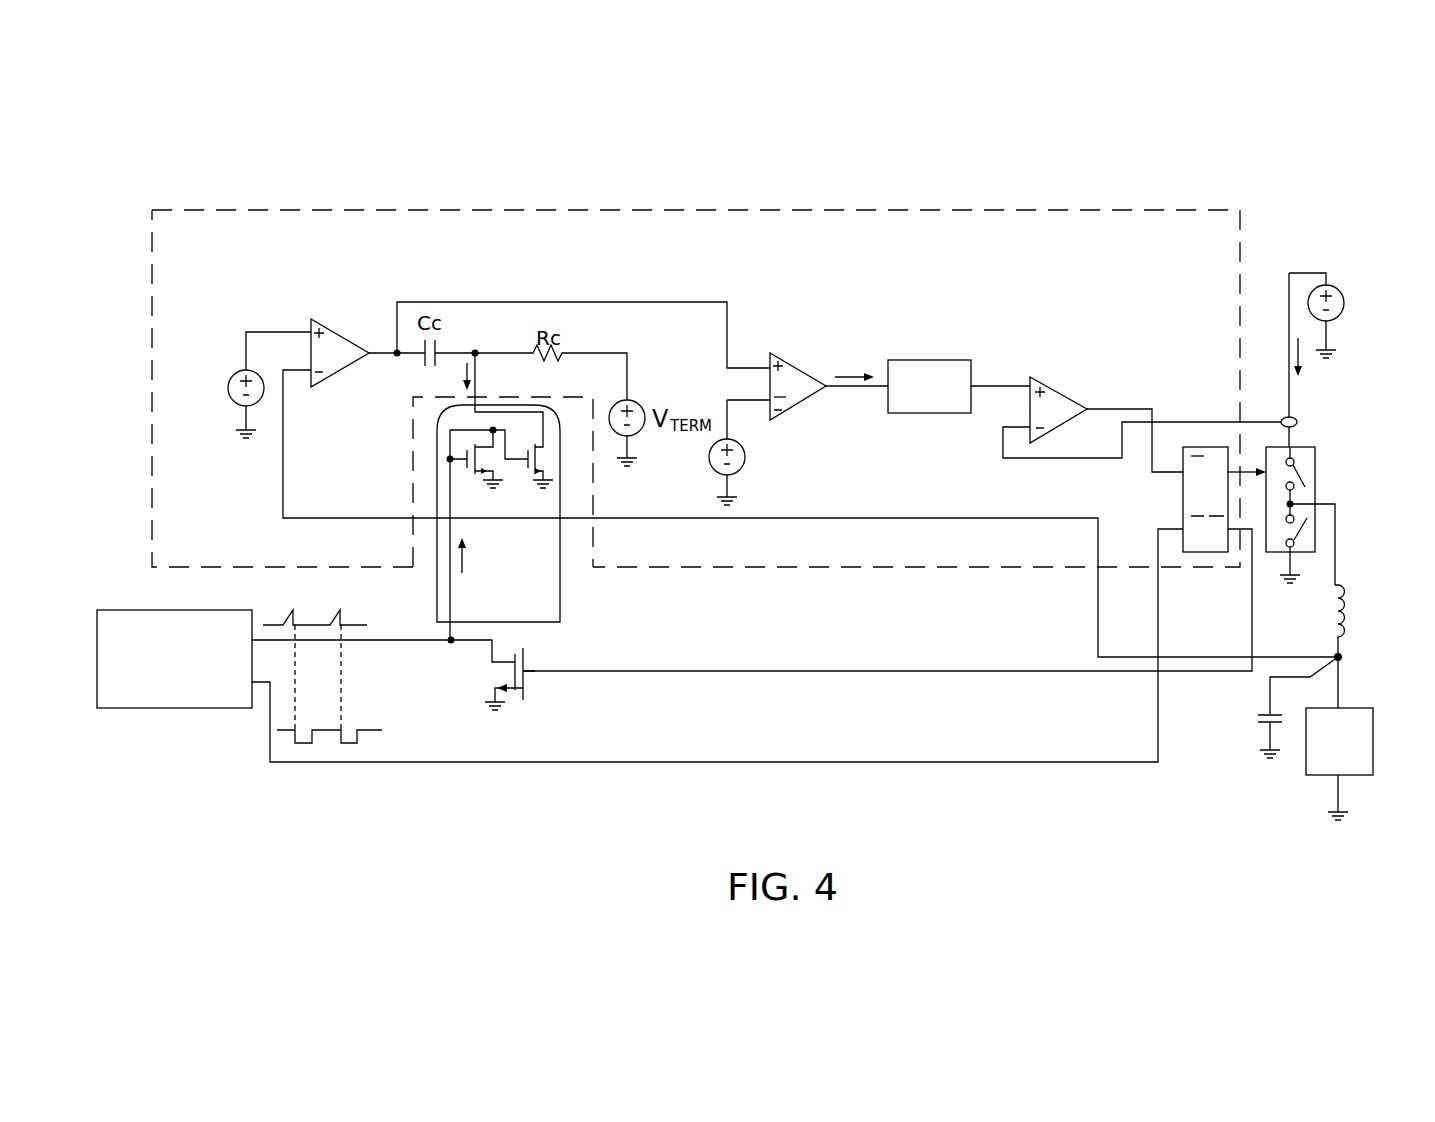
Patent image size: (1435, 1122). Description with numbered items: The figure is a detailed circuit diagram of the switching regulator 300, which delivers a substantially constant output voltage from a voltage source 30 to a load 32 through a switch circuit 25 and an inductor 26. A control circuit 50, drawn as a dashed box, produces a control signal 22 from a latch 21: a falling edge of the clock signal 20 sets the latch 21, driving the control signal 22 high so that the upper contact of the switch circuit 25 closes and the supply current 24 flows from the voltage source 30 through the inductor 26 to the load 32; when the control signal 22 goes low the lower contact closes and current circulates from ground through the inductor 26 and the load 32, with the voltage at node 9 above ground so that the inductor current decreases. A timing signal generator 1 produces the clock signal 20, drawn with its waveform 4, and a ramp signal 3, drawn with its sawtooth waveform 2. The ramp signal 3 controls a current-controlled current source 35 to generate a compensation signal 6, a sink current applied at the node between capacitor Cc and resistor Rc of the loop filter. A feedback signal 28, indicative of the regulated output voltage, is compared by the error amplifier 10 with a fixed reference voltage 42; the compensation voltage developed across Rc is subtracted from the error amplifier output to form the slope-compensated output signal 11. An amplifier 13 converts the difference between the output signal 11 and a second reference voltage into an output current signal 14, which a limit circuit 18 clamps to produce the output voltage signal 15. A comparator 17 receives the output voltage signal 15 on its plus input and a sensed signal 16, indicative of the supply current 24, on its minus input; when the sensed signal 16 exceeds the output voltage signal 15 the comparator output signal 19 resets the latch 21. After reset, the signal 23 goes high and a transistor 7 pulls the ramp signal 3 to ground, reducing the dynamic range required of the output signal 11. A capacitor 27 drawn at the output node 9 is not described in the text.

The timing signal generator 1 is at (177, 710).
The ramp signal waveform 2 is at (278, 622).
The ramp signal 3 is at (468, 558).
The clock signal waveform 4 is at (358, 726).
The compensation signal 6 is at (461, 375).
The transistor 7 is at (522, 658).
The node 9 is at (1342, 658).
The error amplifier 10 is at (338, 330).
The output signal 11 is at (615, 302).
The amplifier 13 is at (793, 352).
The output current signal 14 is at (850, 370).
The output voltage signal 15 is at (1003, 385).
The sensed signal 16 is at (1003, 450).
The comparator 17 is at (1062, 392).
The limit circuit 18 is at (937, 360).
The comparator output signal 19 is at (1115, 408).
The clock signal 20 is at (1158, 612).
The latch 21 is at (1183, 490).
The control signal 22 is at (1238, 468).
The signal 23 is at (1200, 672).
The supply current 24 is at (1305, 355).
The switch circuit 25 is at (1315, 460).
The inductor 26 is at (1345, 612).
The output capacitor 27 is at (1258, 720).
The feedback signal 28 is at (283, 445).
The voltage source 30 is at (1342, 297).
The load 32 is at (1373, 745).
The current-controlled current source 35 is at (562, 582).
The fixed reference voltage 42 is at (255, 371).
The control circuit 50 is at (935, 210).
The switching regulator 300 is at (683, 170).